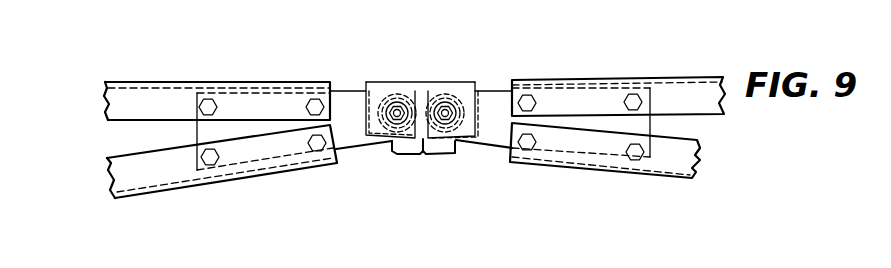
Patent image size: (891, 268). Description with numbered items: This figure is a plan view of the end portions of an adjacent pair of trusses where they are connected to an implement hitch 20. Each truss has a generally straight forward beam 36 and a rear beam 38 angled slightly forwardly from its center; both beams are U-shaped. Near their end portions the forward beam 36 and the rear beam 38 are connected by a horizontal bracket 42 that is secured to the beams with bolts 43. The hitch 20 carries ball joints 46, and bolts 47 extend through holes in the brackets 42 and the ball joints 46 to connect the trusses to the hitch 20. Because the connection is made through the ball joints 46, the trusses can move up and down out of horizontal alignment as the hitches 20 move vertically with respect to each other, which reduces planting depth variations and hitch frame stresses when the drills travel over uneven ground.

The hitch assembly 20 is at (424, 156).
The forward beam 36 is at (703, 86).
The rear beam 38 is at (684, 157).
The horizontal bracket 42 is at (343, 100).
The bolts 43 is at (307, 108).
The ball joints 46 is at (386, 96).
The bolts 47 is at (405, 108).